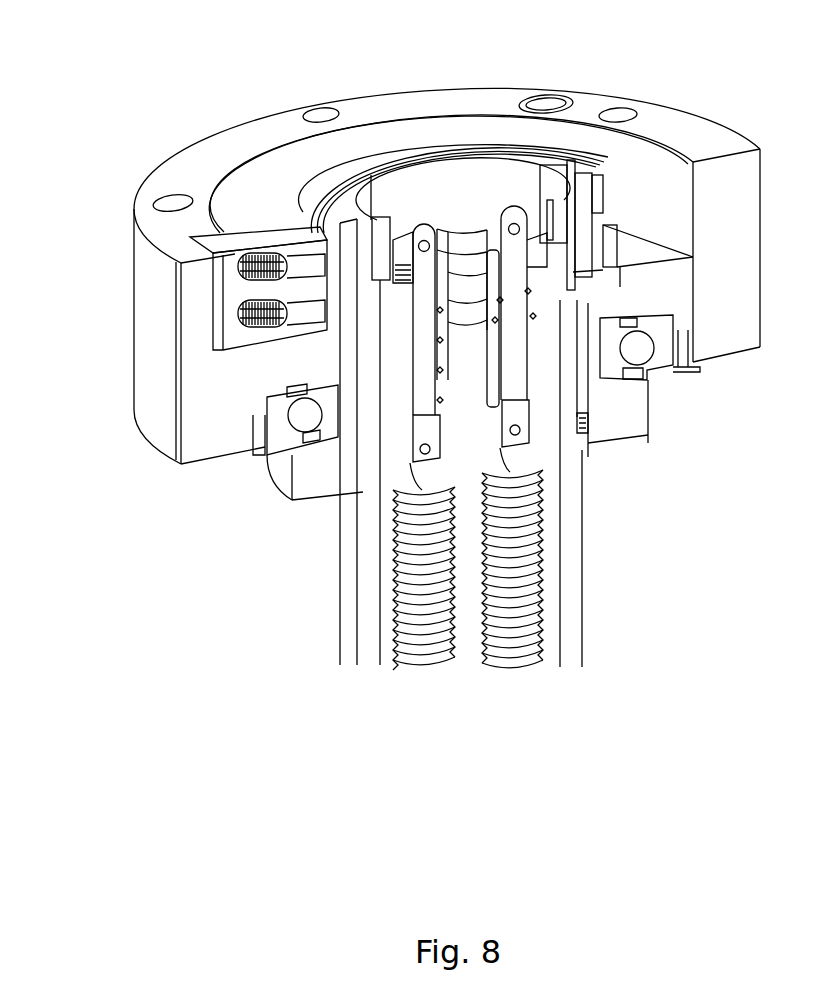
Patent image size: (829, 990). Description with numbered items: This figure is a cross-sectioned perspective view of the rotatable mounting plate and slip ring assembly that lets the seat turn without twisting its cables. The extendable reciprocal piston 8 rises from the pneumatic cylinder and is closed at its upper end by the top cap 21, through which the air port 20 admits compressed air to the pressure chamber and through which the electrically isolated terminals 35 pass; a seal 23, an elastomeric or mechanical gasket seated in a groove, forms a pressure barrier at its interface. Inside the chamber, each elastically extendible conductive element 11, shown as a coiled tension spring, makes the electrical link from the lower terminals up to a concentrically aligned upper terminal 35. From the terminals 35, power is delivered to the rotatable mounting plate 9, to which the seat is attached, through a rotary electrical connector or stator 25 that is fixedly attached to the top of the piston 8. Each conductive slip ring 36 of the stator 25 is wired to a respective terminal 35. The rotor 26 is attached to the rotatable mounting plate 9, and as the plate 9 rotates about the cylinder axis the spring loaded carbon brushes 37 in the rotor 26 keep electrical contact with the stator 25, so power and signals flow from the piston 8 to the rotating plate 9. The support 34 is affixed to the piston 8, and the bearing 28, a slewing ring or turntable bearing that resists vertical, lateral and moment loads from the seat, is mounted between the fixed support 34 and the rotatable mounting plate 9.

The reciprocal piston 8 is at (583, 578).
The rotatable mounting plate 9 is at (683, 113).
The elastically extendible conductive element 11 is at (530, 632).
The port 20 is at (472, 313).
The top cap 21 is at (240, 450).
The seal 23 is at (388, 305).
The stator 25 is at (330, 197).
The rotor 26 is at (155, 206).
The bearing 28 is at (637, 348).
The support 34 is at (620, 422).
The terminal 35 is at (513, 207).
The slip ring 36 is at (298, 256).
The spring loaded carbon brush 37 is at (222, 240).